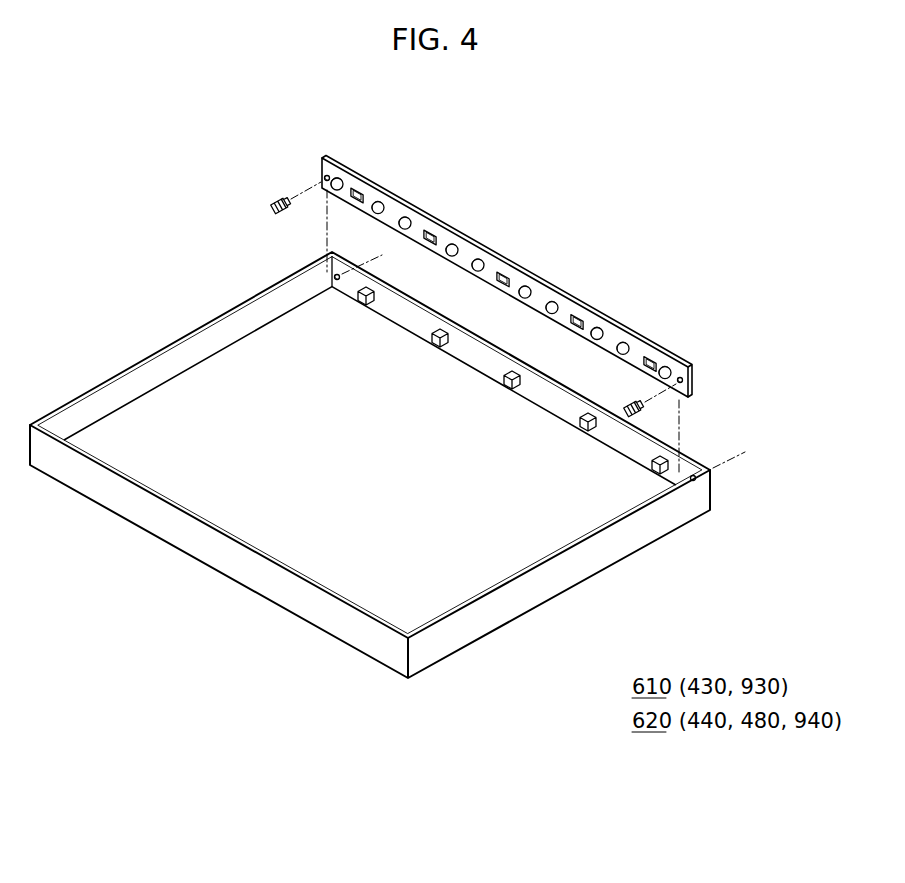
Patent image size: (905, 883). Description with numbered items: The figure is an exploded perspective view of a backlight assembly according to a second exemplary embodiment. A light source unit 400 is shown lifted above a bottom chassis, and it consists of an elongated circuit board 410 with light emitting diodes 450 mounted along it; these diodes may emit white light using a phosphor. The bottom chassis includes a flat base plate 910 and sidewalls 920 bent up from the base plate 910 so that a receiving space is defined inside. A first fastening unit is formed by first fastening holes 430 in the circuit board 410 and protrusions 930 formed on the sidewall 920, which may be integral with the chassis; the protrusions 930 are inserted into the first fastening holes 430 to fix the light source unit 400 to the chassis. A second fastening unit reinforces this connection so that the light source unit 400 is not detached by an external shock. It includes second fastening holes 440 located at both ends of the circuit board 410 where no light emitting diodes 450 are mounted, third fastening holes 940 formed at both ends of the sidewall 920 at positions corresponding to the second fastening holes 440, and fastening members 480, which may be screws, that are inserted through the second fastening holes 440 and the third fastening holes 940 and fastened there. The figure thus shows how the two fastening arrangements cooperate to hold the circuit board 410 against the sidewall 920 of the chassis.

The light source unit 400 is at (507, 293).
The circuit board 410 is at (372, 173).
The first fastening holes 430 is at (430, 232).
The second fastening holes 440 is at (326, 177).
The light emitting diodes 450 is at (479, 265).
The fastening members 480 is at (271, 201).
The base plate 910 is at (260, 503).
The sidewalls 920 is at (248, 566).
The protrusions 930 is at (512, 370).
The third fastening holes 940 is at (338, 279).